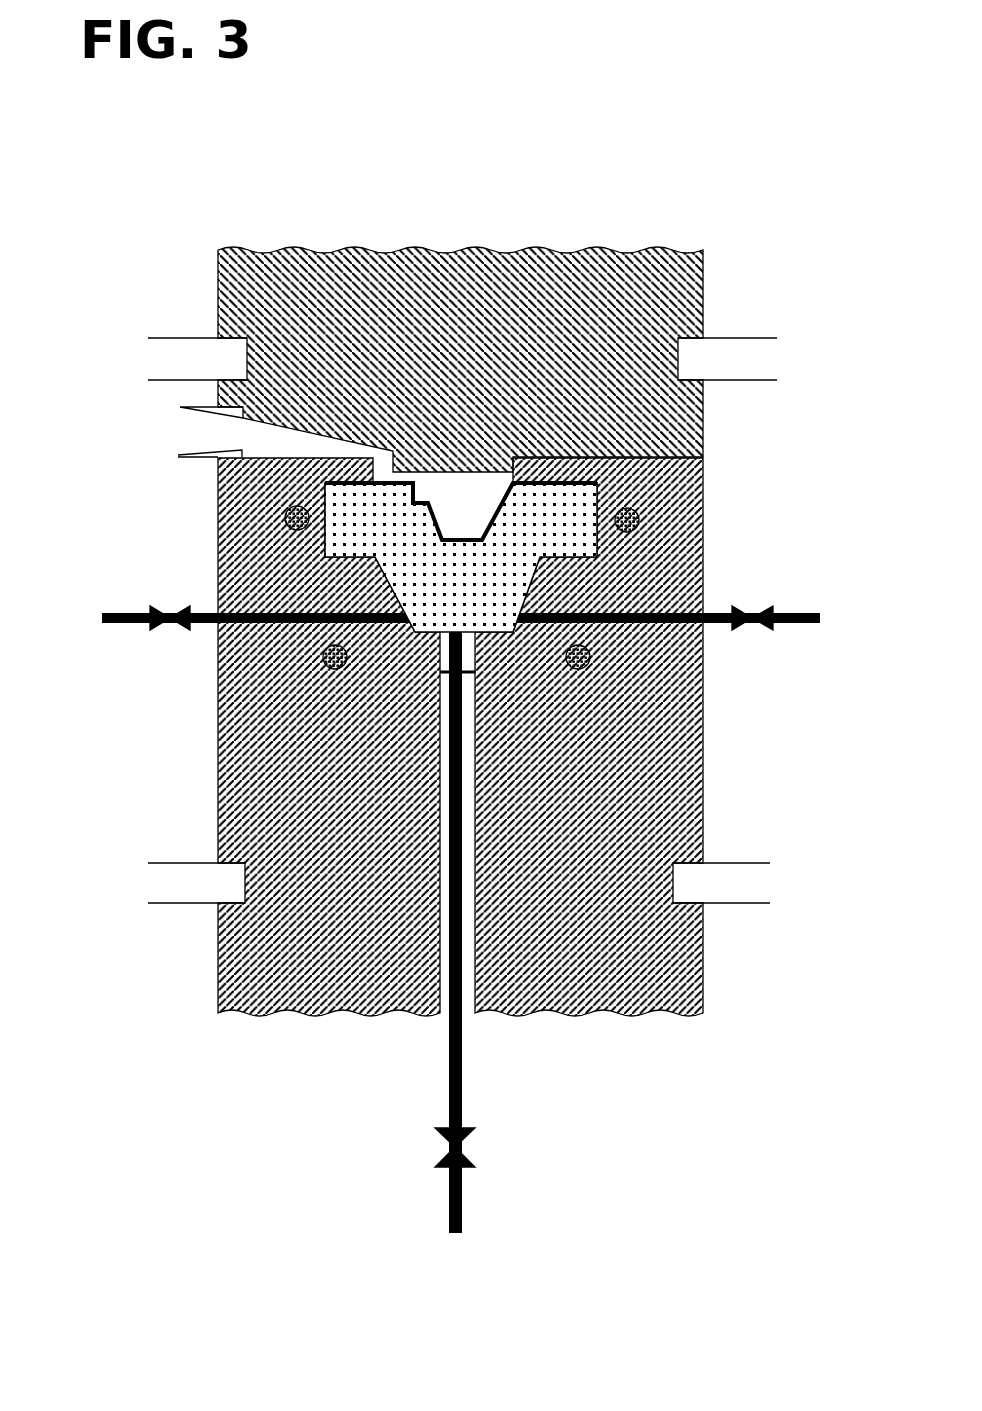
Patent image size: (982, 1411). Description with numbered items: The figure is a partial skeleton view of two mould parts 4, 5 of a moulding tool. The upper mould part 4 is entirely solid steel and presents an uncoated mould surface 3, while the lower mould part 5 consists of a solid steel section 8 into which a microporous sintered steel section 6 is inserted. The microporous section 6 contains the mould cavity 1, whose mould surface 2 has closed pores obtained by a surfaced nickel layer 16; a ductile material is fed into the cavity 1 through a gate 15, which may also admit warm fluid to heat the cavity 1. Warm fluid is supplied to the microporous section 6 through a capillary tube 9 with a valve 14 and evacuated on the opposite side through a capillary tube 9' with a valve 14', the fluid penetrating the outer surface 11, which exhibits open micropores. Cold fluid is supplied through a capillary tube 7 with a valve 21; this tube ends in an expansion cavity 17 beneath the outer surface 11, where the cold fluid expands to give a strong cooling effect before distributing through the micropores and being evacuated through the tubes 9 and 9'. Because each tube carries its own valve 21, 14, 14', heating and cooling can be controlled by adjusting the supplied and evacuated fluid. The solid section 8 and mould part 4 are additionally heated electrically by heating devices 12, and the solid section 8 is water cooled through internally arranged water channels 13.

The mould cavity 1 is at (460, 505).
The mould surface 2 is at (428, 526).
The mould surface 3 is at (474, 472).
The mould part 4 is at (468, 355).
The mould part 5 is at (602, 832).
The microporous section 6 is at (432, 602).
The capillary tube 7 is at (462, 1066).
The solid section 8 is at (217, 990).
The capillary tube 9 is at (479, 597).
The capillary tube 9' is at (235, 692).
The outer surface 11 is at (542, 558).
The heating devices 12 is at (188, 360).
The water channels 13 is at (641, 514).
The valve 14 is at (792, 648).
The valve 14' is at (117, 652).
The gate 15 is at (210, 432).
The nickel layer 16 is at (327, 493).
The expansion cavity 17 is at (472, 666).
The valve 21 is at (447, 1144).